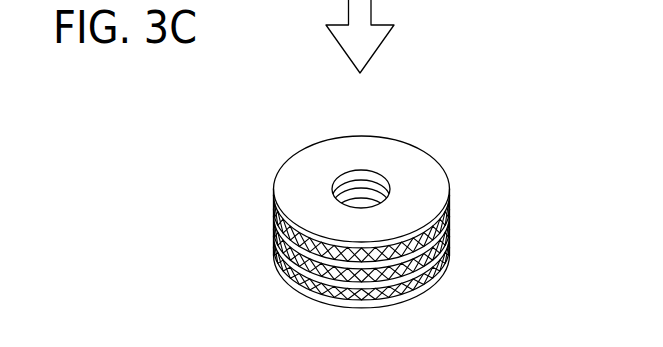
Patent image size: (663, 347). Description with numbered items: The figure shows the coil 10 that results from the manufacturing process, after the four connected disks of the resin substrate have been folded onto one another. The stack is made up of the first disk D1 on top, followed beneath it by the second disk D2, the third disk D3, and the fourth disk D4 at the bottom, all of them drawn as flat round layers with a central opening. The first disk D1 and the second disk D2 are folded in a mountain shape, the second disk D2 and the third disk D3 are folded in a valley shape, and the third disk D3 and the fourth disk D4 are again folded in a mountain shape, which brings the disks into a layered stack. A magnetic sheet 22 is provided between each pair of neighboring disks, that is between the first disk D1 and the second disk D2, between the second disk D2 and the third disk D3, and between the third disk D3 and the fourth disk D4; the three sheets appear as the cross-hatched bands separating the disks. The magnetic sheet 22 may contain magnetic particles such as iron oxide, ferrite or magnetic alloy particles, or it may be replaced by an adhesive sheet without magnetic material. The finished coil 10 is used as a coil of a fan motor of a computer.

The coil 10 is at (291, 138).
The first disk D1 is at (420, 168).
The second disk D2 is at (447, 242).
The third disk D3 is at (449, 268).
The fourth disk D4 is at (430, 286).
The magnetic sheet 22 is at (272, 240).